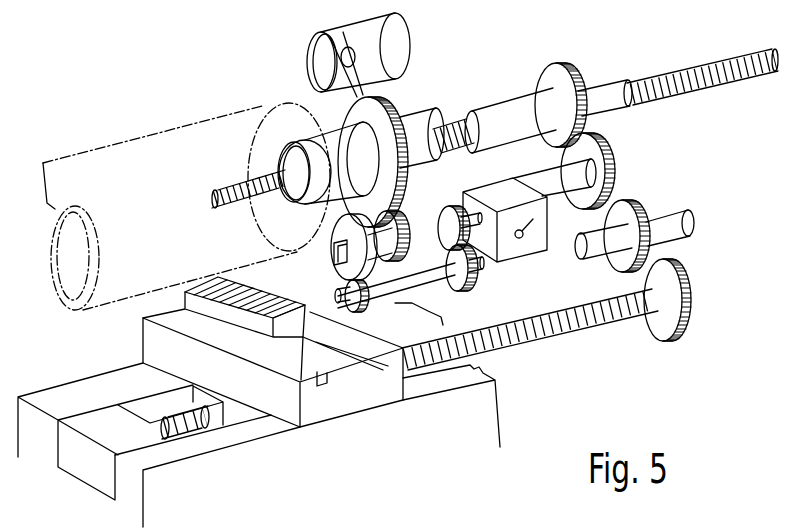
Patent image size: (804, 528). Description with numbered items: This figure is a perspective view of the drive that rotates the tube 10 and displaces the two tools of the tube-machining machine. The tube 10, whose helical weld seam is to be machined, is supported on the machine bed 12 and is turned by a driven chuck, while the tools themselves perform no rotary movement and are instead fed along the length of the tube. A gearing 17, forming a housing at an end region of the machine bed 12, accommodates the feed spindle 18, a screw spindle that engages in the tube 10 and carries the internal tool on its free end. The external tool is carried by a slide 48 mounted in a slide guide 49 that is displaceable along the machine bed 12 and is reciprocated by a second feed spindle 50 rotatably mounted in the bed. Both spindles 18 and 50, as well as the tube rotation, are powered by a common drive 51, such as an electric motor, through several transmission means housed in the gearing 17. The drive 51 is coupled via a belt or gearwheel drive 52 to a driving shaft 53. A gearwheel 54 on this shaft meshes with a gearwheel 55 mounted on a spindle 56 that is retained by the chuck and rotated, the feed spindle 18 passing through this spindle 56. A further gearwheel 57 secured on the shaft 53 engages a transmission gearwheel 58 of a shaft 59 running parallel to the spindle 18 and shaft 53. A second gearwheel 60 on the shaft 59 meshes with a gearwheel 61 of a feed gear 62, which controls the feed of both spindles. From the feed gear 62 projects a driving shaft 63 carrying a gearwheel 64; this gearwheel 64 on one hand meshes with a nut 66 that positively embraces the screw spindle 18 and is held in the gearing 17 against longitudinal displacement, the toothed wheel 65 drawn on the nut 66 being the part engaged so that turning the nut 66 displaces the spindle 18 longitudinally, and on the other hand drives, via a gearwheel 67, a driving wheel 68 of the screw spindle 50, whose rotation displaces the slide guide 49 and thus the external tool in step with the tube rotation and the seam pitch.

The tube 10 is at (84, 144).
The machine bed 12 is at (487, 404).
The gearing 17 is at (466, 108).
The feed spindle 18 is at (657, 80).
The slide 48 is at (278, 328).
The slide guide 49 is at (370, 393).
The feed spindle 50 is at (583, 333).
The drive 51 is at (398, 43).
The belt or gearwheel drive 52 is at (327, 101).
The driving shaft 53 is at (397, 275).
The gearwheel 54 is at (405, 215).
The gearwheel 55 is at (390, 112).
The spindle 56 is at (267, 107).
The gearwheel 57 is at (333, 249).
The transmission gearwheel 58 is at (341, 288).
The shaft 59 is at (443, 320).
The second gearwheel 60 is at (473, 283).
The gearwheel 61 is at (452, 205).
The feed gear 62 is at (533, 243).
The driving shaft 63 is at (553, 198).
The gearwheel 64 is at (613, 156).
The gear 65 is at (577, 83).
The nut 66 is at (510, 108).
The gearwheel 67 is at (650, 203).
The driving wheel 68 is at (680, 278).